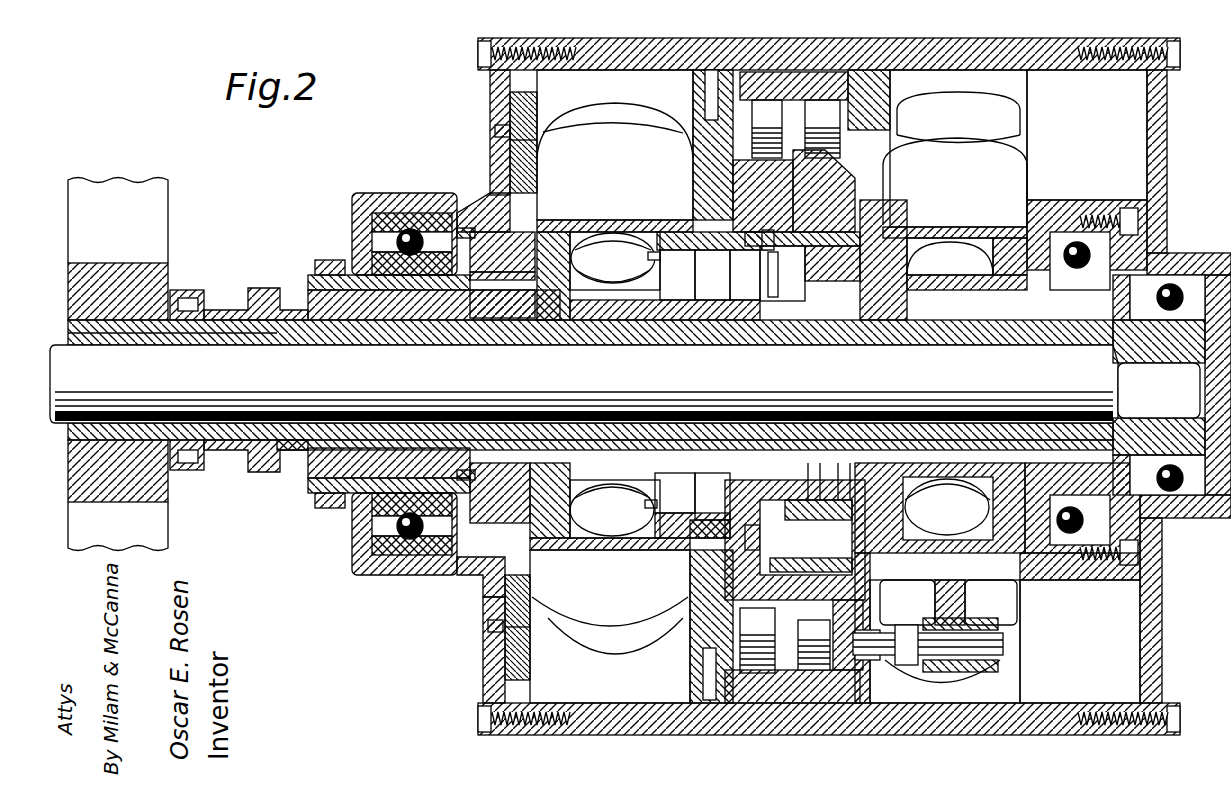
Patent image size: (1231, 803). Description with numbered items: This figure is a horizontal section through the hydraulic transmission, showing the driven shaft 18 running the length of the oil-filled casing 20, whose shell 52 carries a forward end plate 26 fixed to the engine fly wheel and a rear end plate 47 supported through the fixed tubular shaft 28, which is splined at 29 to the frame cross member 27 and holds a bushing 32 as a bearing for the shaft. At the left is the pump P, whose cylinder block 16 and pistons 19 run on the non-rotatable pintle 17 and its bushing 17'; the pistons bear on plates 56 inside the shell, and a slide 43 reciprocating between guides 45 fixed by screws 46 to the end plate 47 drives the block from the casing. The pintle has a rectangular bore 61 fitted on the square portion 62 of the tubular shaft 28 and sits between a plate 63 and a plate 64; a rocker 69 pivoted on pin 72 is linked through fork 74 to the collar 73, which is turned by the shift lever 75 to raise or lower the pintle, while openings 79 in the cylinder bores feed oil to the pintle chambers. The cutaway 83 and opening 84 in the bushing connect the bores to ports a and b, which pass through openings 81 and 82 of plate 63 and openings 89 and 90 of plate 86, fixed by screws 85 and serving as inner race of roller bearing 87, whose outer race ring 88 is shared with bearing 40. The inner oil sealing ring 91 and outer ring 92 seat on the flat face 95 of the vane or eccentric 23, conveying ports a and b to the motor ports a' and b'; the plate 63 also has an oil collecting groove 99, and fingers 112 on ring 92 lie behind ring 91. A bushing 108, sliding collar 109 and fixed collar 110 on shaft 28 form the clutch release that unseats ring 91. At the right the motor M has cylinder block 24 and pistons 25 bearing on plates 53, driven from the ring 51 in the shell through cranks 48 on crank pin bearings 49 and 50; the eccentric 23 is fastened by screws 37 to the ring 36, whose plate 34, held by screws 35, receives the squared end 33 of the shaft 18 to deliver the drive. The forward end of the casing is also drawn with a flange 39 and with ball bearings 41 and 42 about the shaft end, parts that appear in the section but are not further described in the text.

The cylinder block 16 is at (578, 635).
The pintle 17 is at (665, 276).
The bushing 17' is at (712, 266).
The central shaft 18 is at (584, 384).
The pistons 19 is at (615, 655).
The casing 20 is at (488, 103).
The rotary vane or eccentric 23 is at (955, 288).
The cylinder block 24 is at (955, 203).
The pistons 25 is at (958, 117).
The forward end plate 26 is at (1160, 665).
The cross member 27 is at (168, 228).
The tubular shaft 28 is at (300, 462).
The splined connection 29 is at (118, 371).
The bushing 32 is at (206, 445).
The squared forward end 33 is at (1159, 387).
The plate 34 is at (1150, 540).
The screws 35 is at (1125, 578).
The ring 36 is at (1055, 578).
The screws 37 is at (985, 482).
The flange 39 is at (1170, 255).
The roller bearing 40 is at (830, 635).
The ball bearing 41 is at (1075, 232).
The ball bearing 42 is at (1150, 235).
The slide 43 is at (520, 232).
The guides 45 is at (537, 128).
The screws 46 is at (495, 130).
The rear end plate 47 is at (483, 655).
The crank members 48 is at (907, 625).
The crank pin bearings 49 is at (975, 618).
The crank pin bearings 50 is at (870, 630).
The ring 51 is at (875, 680).
The shell 52 is at (888, 40).
The plates 53 is at (1022, 98).
The plates 56 is at (640, 85).
The bore 61 is at (740, 385).
The square portion 62 is at (675, 463).
The plate 63 is at (700, 168).
The plate 64 is at (493, 493).
The rocker 69 is at (525, 225).
The pin 72 is at (573, 248).
The collar 73 is at (365, 262).
The fork 74 is at (465, 232).
The lever 75 is at (318, 262).
The openings 79 is at (660, 270).
The opening 81 is at (710, 520).
The opening 82 is at (712, 310).
The cutaway 83 is at (592, 550).
The opening 84 is at (600, 232).
The screws 85 is at (772, 238).
The plate 86 is at (700, 575).
The roller bearing 87 is at (792, 655).
The outer race ring 88 is at (830, 710).
The opening 89 is at (733, 505).
The opening 90 is at (750, 310).
The inner oil sealing ring 91 is at (803, 515).
The outer oil sealing ring 92 is at (800, 558).
The flat face 95 is at (860, 228).
The oil collecting annular groove 99 is at (708, 700).
The bushing 108 is at (452, 505).
The collar 109 is at (258, 288).
The collar 110 is at (180, 292).
The fingers 112 is at (780, 246).
The pump P is at (632, 125).
The motor M is at (1010, 175).
The port a is at (615, 509).
The port a' is at (940, 508).
The port b is at (613, 258).
The port b' is at (967, 256).